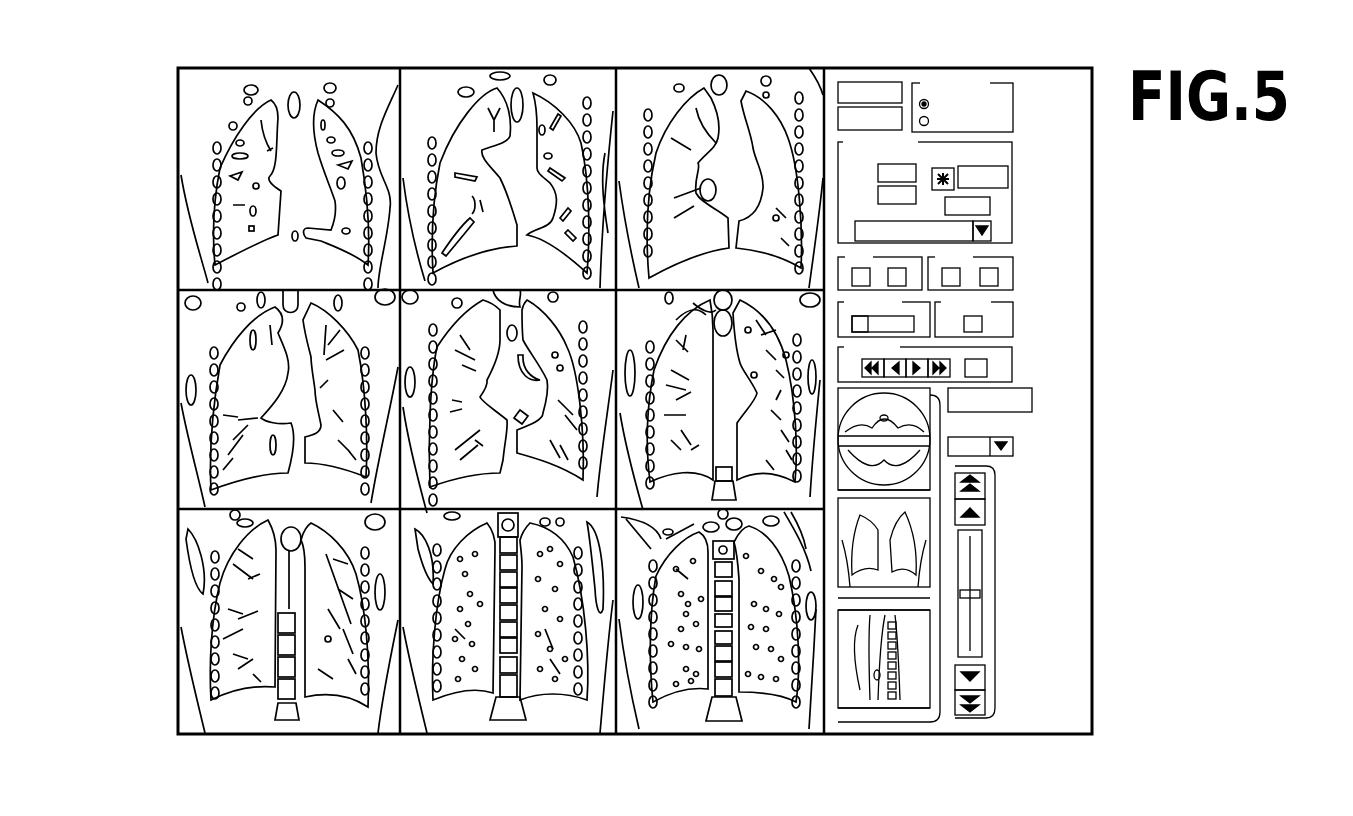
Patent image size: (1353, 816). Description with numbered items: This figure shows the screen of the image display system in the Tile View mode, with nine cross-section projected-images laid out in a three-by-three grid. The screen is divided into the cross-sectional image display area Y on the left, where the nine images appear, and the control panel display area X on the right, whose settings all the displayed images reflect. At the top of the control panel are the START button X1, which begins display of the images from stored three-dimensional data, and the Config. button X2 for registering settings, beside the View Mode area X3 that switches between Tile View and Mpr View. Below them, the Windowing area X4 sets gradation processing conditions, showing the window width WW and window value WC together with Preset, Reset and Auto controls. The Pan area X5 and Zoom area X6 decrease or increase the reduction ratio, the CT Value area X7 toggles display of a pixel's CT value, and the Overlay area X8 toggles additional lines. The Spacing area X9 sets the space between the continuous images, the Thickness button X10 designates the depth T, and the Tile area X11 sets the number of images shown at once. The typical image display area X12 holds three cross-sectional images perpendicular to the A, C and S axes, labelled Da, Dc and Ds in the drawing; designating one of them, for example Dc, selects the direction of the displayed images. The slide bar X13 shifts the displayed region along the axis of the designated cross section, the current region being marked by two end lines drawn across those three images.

The control panel display area X is at (1043, 68).
The cross-sectional image display area Y is at (790, 70).
The START button X1 is at (880, 82).
The Config. button X2 is at (822, 92).
The View Mode area X3 is at (1013, 108).
The Windowing area X4 is at (1013, 176).
The Pan area X5 is at (900, 257).
The Zoom area X6 is at (1013, 278).
The CT Value area X7 is at (930, 337).
The Overlay area X8 is at (1013, 318).
The Spacing area X9 is at (1013, 367).
The Thickness button X10 is at (1032, 398).
The Tile area X11 is at (1013, 448).
The typical image display area X12 is at (948, 466).
The slide bar X13 is at (992, 470).
The axial image thumbnail Da is at (840, 405).
The cross-sectional image Dc is at (848, 530).
The sagittal image thumbnail Ds is at (886, 724).